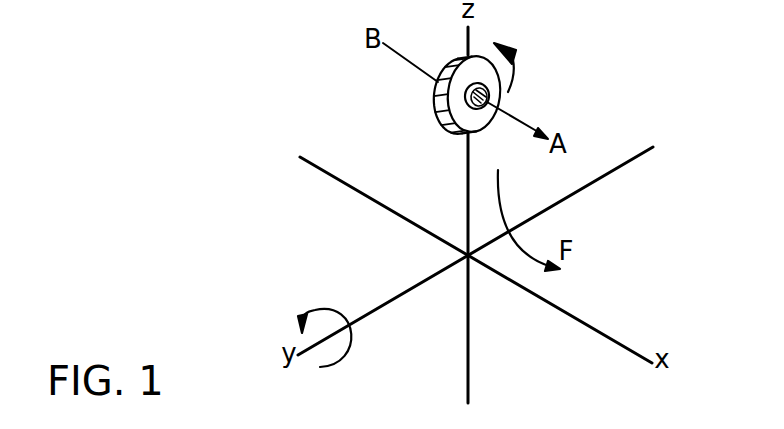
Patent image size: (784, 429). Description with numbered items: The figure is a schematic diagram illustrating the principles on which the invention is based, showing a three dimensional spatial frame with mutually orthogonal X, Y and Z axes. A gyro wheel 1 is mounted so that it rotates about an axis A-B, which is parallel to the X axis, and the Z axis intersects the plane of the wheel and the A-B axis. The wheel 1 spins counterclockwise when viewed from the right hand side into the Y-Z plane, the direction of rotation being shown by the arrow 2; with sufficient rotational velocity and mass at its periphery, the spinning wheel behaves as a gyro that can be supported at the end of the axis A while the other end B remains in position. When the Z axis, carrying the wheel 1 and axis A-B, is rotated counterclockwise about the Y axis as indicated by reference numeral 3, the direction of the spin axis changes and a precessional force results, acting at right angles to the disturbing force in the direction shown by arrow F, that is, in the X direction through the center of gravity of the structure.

The gyro wheel 1 is at (452, 116).
The arrow 2 is at (519, 69).
The rotation about the Y axis 3 is at (325, 308).